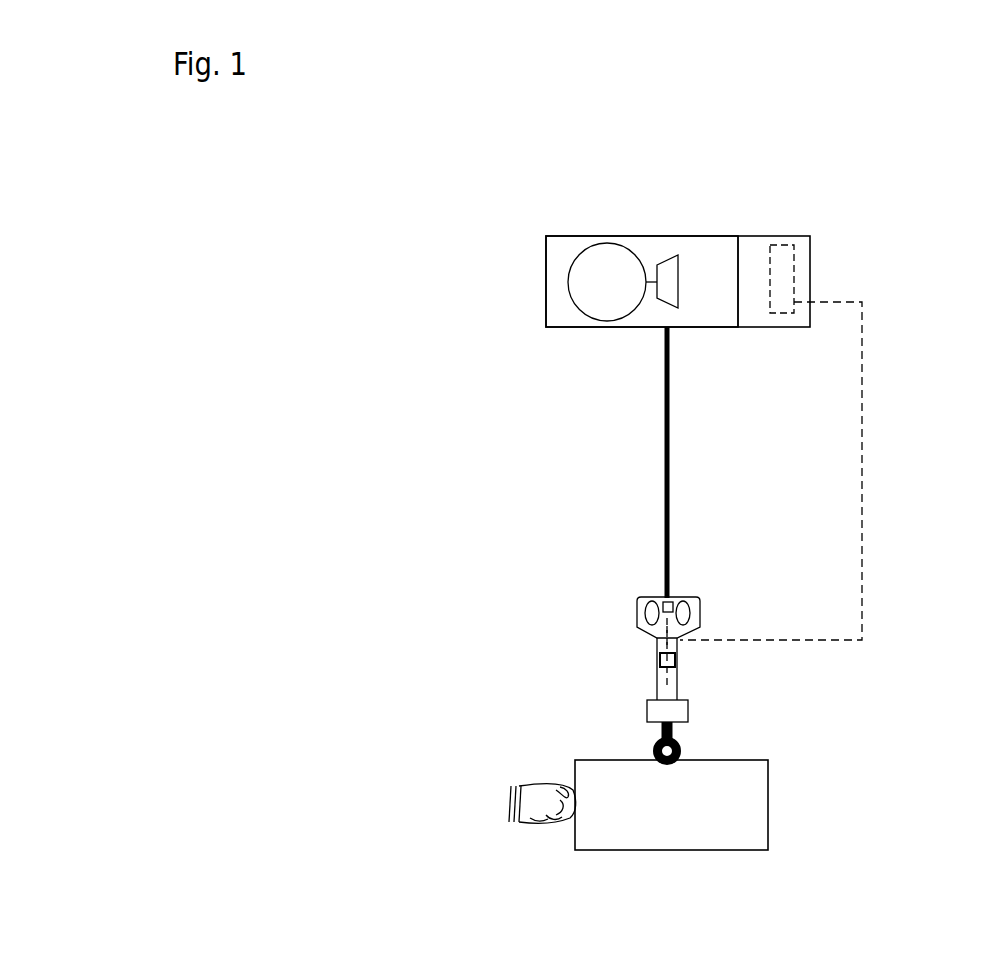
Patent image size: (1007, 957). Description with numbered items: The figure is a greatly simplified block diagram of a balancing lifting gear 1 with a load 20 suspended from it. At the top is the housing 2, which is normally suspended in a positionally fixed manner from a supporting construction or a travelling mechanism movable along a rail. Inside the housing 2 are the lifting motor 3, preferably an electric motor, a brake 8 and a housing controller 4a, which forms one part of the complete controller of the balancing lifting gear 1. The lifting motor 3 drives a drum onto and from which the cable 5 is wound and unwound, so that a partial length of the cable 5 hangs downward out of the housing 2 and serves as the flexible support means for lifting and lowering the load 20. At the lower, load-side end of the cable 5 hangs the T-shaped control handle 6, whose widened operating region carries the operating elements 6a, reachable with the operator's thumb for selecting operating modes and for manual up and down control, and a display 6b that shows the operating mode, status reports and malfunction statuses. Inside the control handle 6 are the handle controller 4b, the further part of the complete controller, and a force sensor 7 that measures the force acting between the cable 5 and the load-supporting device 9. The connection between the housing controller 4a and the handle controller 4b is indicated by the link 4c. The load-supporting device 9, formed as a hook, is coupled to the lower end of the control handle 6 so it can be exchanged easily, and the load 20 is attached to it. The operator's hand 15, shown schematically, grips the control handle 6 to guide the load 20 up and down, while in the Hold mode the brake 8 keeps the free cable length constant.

The balancing lifting gear 1 is at (802, 213).
The housing 2 is at (640, 236).
The lifting motor 3 is at (575, 268).
The housing controller 4a is at (780, 267).
The handle controller 4b is at (660, 637).
The communication link 4c is at (862, 487).
The cable 5 is at (667, 402).
The control handle 6 is at (693, 628).
The operating elements 6a is at (648, 608).
The display 6b is at (670, 603).
The force sensor 7 is at (677, 658).
The brake 8 is at (670, 299).
The load-supporting device 9 is at (677, 733).
The hand 15 is at (510, 790).
The load 20 is at (768, 800).